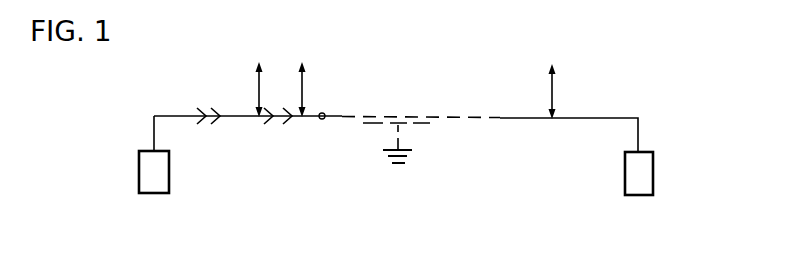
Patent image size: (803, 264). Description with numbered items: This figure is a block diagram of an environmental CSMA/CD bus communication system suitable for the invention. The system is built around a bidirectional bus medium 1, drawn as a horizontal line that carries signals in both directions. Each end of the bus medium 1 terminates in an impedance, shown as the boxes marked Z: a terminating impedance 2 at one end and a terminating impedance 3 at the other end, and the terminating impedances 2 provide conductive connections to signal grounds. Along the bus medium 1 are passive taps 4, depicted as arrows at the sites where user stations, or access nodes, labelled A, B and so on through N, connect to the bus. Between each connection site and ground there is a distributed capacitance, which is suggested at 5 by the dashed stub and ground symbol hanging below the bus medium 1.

The bidirectional bus medium 1 is at (320, 119).
The terminating impedance 2 is at (139, 172).
The terminating impedance 3 is at (653, 179).
The passive tap 4 is at (301, 118).
The distributed capacitance 5 is at (407, 128).